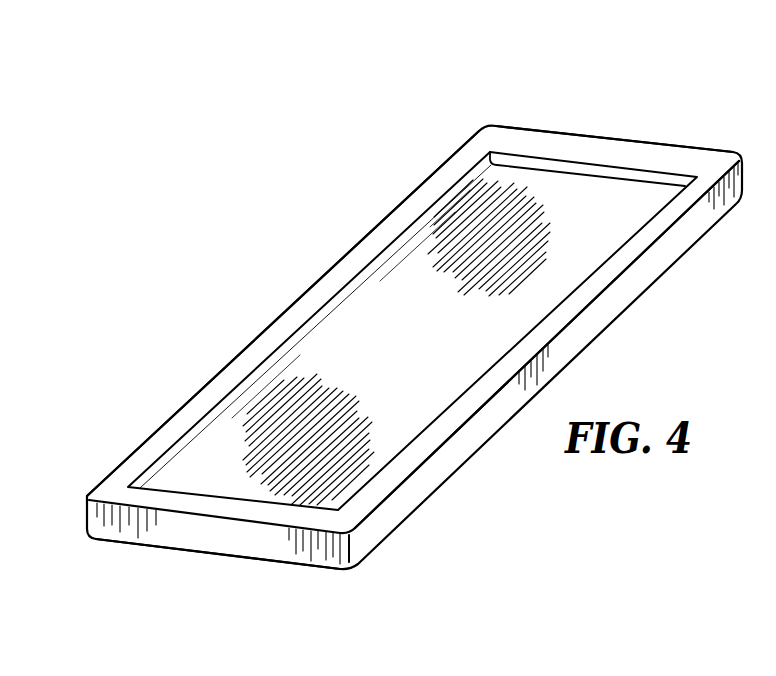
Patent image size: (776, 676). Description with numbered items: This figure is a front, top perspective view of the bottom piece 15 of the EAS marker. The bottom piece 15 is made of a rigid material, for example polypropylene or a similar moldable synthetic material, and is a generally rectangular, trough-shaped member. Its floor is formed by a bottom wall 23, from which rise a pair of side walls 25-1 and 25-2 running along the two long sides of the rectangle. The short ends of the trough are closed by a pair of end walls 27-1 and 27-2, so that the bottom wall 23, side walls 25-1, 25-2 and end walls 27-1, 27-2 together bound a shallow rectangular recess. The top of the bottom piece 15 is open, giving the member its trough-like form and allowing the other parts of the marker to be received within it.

The bottom piece 15 is at (310, 270).
The bottom wall 23 is at (400, 422).
The side wall 25-1 is at (205, 400).
The side wall 25-2 is at (578, 329).
The end wall 27-1 is at (608, 150).
The end wall 27-2 is at (218, 536).